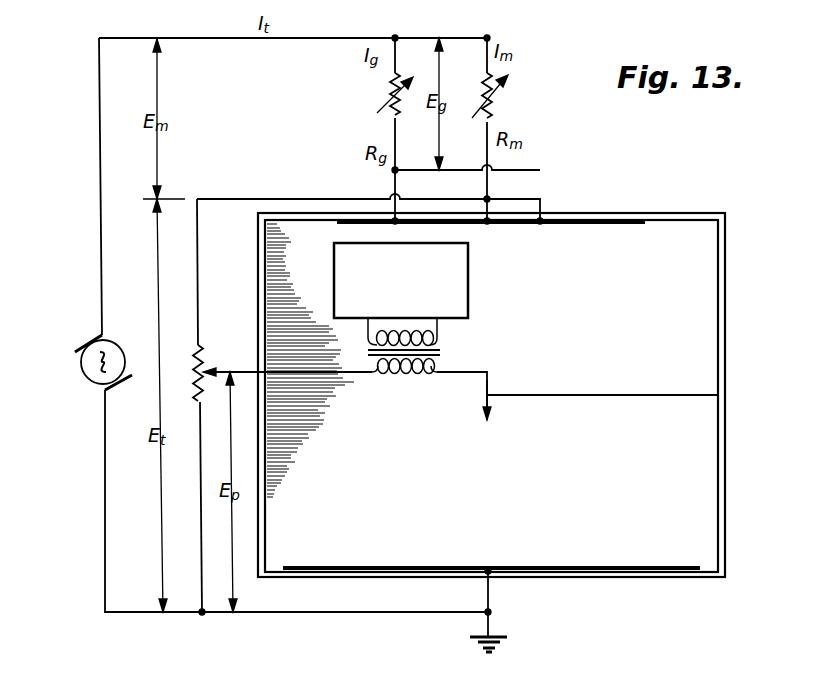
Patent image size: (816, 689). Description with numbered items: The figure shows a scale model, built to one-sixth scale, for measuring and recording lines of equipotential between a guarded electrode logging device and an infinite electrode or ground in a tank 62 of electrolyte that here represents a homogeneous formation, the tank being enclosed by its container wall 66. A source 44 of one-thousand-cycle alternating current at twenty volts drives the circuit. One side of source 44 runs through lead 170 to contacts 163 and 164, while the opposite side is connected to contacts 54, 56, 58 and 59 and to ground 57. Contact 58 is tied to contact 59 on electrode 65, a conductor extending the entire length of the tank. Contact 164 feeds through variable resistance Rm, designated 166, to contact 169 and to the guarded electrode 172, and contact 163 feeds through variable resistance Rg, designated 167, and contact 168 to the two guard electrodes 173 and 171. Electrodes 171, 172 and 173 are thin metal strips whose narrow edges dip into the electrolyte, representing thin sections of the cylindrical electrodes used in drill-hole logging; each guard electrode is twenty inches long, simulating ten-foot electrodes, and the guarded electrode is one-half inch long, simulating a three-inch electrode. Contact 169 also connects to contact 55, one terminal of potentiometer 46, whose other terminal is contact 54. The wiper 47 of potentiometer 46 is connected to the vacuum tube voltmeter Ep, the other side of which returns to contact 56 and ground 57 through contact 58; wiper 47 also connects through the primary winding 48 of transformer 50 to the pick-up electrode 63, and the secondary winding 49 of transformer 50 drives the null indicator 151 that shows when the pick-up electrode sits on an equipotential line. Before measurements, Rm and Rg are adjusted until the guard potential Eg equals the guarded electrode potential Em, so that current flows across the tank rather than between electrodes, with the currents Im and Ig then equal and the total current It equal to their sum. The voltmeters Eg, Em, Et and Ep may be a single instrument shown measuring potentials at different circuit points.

The source of alternating current 44 is at (80, 368).
The potentiometer 46 is at (197, 347).
The wiper 47 is at (219, 370).
The primary winding 48 is at (430, 373).
The secondary winding 49 is at (438, 336).
The transformer 50 is at (450, 352).
The contact 54 is at (201, 614).
The contact 55 is at (226, 199).
The contact 56 is at (237, 613).
The ground 57 is at (500, 640).
The contact 58 is at (490, 598).
The contact 59 is at (480, 579).
The tank 62 is at (490, 500).
The pick-up electrode 63 is at (490, 400).
The electrode 65 is at (540, 566).
The container 66 is at (720, 450).
The null indicator 151 is at (468, 294).
The contact 163 is at (395, 36).
The contact 164 is at (488, 36).
The variable resistance Rm 166 is at (495, 108).
The variable resistance Rg 167 is at (389, 126).
The contact 168 is at (394, 171).
The contact 169 is at (488, 199).
The lead 170 is at (218, 38).
The guard electrode 171 is at (565, 224).
The guarded electrode 172 is at (487, 224).
The guard electrode 173 is at (345, 227).